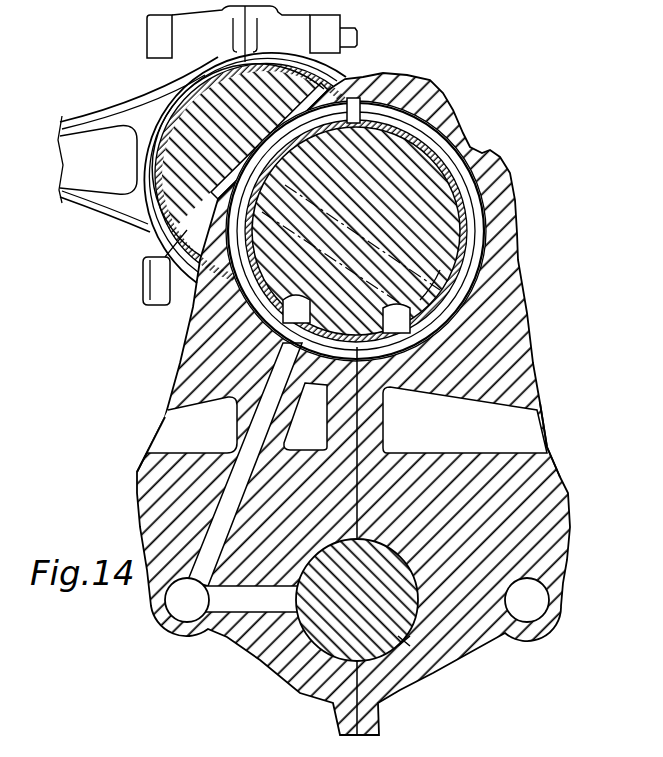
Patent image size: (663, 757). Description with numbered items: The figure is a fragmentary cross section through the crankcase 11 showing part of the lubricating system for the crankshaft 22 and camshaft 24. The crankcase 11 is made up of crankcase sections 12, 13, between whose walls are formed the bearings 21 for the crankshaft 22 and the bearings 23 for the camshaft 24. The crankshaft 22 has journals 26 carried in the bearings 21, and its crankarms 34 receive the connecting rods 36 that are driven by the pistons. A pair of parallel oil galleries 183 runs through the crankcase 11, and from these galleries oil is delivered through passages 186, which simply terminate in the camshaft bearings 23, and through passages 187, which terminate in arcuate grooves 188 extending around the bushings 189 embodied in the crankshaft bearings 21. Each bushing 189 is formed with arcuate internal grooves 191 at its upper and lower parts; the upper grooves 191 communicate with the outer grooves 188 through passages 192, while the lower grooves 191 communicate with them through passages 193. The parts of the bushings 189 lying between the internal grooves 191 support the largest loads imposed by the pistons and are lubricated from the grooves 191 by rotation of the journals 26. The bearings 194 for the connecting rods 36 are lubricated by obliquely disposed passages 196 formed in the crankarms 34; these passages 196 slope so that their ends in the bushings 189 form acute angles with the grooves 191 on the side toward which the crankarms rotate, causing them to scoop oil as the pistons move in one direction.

The crankcase 11 is at (527, 354).
The crankcase section 12 is at (552, 477).
The crankcase section 13 is at (140, 477).
The bearings for the crankshaft 21 is at (457, 260).
The crankshaft 22 is at (462, 210).
The bearings for the camshaft 23 is at (407, 565).
The camshaft 24 is at (405, 645).
The journals 26 is at (433, 153).
The crankarms 34 is at (168, 135).
The connecting rods 36 is at (80, 118).
The oil galleries 183 is at (193, 620).
The passages 186 is at (278, 614).
The passages 187 is at (246, 444).
The arcuate grooves 188 is at (478, 240).
The bushings 189 is at (470, 172).
The arcuate internal grooves 191 is at (412, 118).
The passages 192 is at (374, 82).
The passages 193 is at (300, 338).
The bearings for the connecting rods 194 is at (173, 97).
The obliquely disposed passages 196 is at (230, 148).